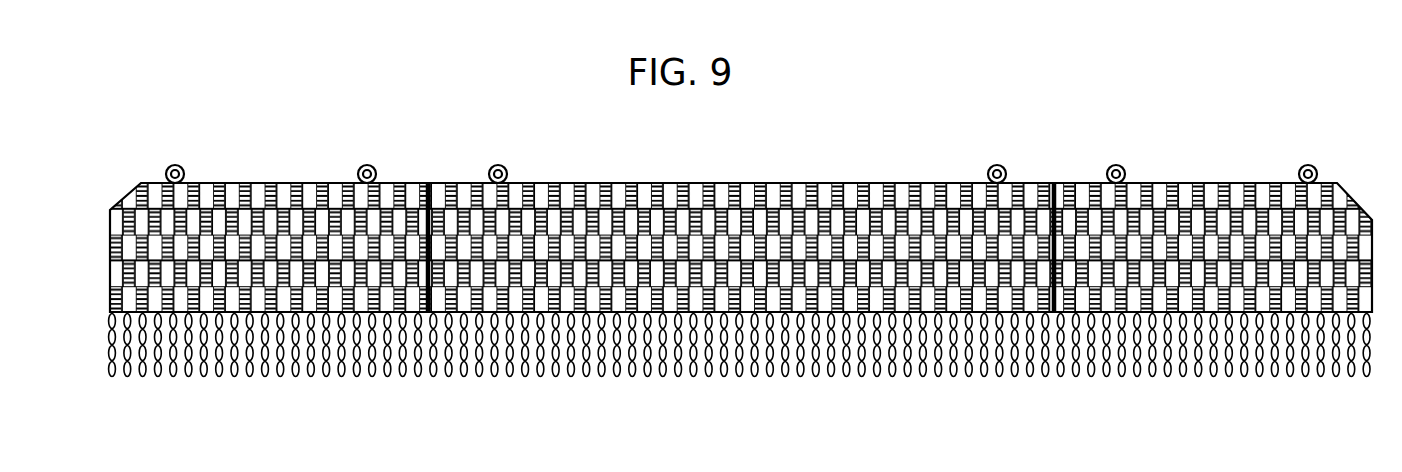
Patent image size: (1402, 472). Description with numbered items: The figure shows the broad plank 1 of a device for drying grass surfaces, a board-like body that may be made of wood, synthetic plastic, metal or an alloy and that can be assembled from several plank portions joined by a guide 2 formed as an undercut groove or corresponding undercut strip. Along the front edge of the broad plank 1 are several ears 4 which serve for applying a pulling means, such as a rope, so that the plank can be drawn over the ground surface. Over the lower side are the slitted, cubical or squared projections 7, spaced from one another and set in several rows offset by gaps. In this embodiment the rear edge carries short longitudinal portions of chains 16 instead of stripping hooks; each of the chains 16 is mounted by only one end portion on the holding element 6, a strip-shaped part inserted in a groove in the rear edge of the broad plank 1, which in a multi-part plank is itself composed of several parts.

The broad plank 1 is at (741, 206).
The guide 2 is at (425, 245).
The ears 4 is at (185, 167).
The holding element 6 is at (130, 320).
The slitted, cubical or squared projections 7 is at (620, 183).
The chains 16 is at (1368, 336).